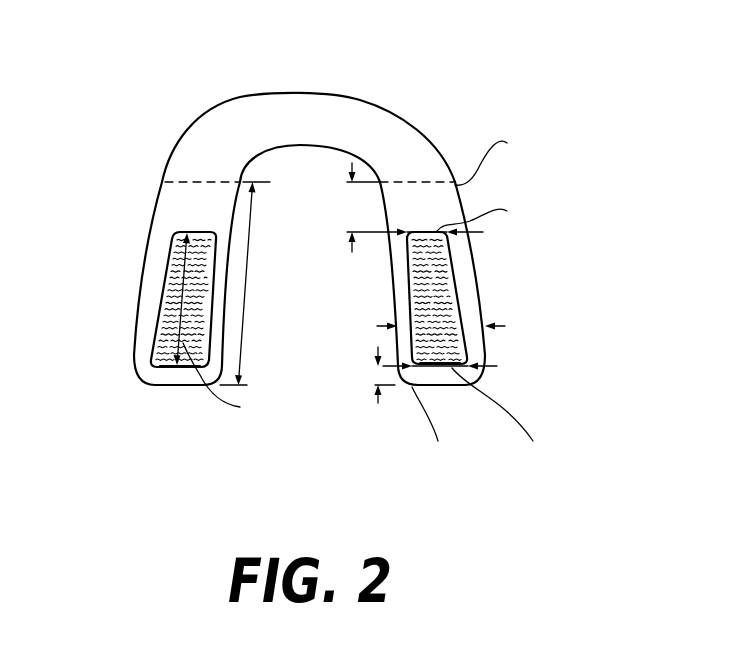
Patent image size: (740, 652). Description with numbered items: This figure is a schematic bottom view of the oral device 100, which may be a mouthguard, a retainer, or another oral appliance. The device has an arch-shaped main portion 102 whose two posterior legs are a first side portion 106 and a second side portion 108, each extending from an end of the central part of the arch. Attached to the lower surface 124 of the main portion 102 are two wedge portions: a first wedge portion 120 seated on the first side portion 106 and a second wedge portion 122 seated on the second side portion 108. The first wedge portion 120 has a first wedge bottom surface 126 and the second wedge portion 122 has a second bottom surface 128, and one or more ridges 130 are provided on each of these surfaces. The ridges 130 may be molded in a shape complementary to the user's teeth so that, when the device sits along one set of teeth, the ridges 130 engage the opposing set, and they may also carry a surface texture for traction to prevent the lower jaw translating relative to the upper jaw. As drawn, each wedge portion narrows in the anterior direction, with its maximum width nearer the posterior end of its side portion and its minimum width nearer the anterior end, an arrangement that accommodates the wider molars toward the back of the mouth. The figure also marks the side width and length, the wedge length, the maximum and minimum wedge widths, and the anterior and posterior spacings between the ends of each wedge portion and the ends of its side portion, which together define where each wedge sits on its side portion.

The oral device 100 is at (113, 91).
The main portion 102 is at (135, 372).
The first side portion 106 is at (147, 243).
The second side portion 108 is at (392, 276).
The first wedge portion 120 is at (160, 296).
The second wedge portion 122 is at (463, 320).
The lower surface 124 is at (163, 196).
The first wedge bottom surface 126 is at (163, 266).
The second bottom surface 128 is at (458, 292).
The ridges 130 is at (165, 357).